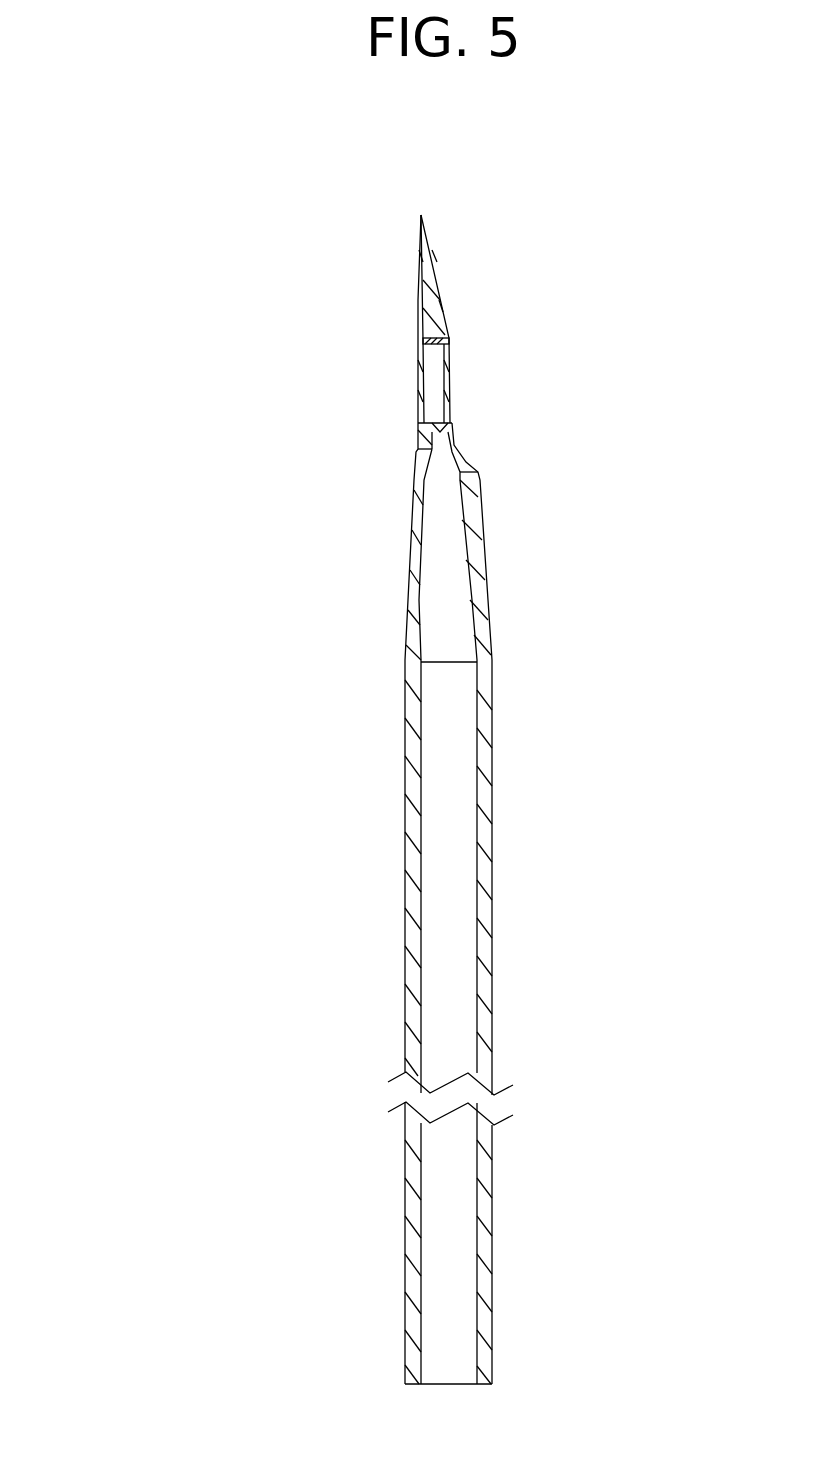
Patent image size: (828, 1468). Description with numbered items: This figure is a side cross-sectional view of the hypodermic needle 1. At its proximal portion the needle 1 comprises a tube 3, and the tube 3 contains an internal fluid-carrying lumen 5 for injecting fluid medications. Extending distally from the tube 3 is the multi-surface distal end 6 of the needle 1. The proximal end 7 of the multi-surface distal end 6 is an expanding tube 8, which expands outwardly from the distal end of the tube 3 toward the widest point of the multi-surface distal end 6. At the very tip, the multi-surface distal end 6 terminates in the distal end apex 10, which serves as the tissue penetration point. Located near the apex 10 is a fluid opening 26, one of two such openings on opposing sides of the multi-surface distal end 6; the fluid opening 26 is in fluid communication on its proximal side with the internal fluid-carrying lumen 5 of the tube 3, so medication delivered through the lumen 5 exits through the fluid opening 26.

The hypodermic needle 1 is at (131, 1120).
The tube 3 is at (408, 822).
The internal fluid-carrying lumen 5 is at (455, 735).
The multi-surface distal end 6 is at (408, 542).
The proximal end 7 is at (457, 663).
The expanding tube 8 is at (482, 540).
The distal end apex 10 is at (421, 219).
The fluid opening 26 is at (438, 382).